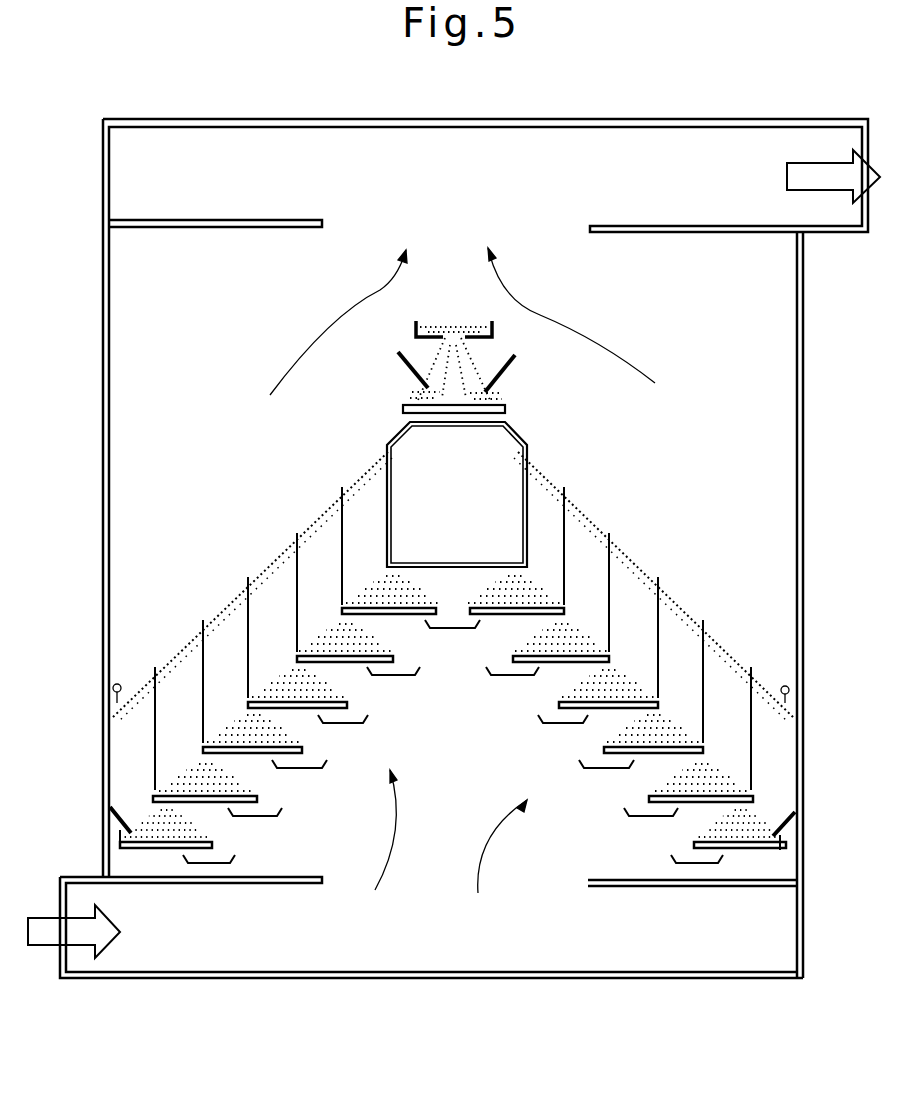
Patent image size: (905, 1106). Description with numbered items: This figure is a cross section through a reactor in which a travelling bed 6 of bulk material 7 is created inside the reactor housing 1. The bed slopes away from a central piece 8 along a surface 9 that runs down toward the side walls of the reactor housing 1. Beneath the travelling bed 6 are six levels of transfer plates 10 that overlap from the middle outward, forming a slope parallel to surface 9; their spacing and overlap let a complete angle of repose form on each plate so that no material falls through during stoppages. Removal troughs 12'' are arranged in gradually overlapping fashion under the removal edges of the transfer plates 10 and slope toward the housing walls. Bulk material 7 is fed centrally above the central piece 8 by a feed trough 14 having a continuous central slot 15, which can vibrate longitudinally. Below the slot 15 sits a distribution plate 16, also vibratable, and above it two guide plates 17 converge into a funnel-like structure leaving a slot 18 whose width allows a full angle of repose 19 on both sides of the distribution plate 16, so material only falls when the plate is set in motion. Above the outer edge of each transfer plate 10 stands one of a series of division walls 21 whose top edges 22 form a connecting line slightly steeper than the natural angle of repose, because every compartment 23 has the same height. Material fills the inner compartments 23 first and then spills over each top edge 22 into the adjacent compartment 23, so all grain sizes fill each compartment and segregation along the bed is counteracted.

The reactor housing 1 is at (800, 508).
The travelling bed 6 is at (686, 604).
The bulk material 7 is at (490, 358).
The central piece 8 is at (459, 507).
The surface 9 is at (630, 560).
The transfer plates 10 is at (303, 752).
The removal troughs 12'' is at (300, 810).
The feed trough 14 is at (415, 325).
The central slot 15 is at (453, 325).
The distribution plate 16 is at (408, 410).
The guide plates 17 is at (398, 355).
The slot 18 is at (452, 387).
The angle of repose 19 is at (497, 402).
The division walls 21 is at (342, 588).
The top edge 22 is at (343, 488).
The compartment 23 is at (322, 575).